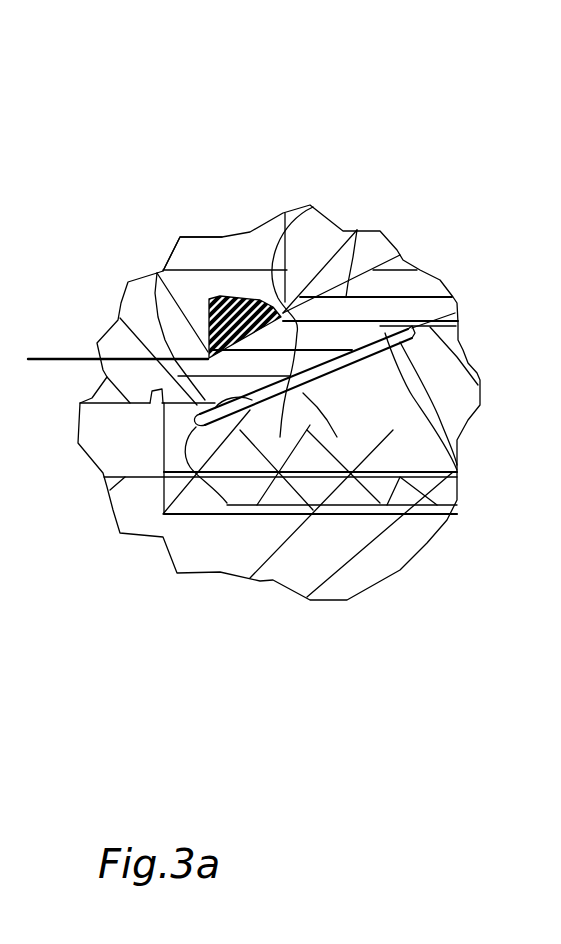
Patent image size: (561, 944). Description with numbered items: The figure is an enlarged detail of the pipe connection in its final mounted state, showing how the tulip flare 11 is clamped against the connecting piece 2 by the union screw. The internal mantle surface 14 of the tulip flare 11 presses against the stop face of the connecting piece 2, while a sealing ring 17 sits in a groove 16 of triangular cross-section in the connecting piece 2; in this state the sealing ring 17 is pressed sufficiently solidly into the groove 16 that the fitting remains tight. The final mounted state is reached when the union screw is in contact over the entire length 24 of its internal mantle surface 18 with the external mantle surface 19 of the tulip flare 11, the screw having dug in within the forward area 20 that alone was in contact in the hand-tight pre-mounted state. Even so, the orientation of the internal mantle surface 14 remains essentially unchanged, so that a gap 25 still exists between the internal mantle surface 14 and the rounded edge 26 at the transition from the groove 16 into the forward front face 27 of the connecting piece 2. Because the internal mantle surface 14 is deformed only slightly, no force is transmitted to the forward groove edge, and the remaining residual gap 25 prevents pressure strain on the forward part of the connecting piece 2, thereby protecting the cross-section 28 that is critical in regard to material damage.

The connecting piece 2 is at (254, 327).
The tulip flare 11 is at (398, 564).
The internal mantle surface 14 is at (363, 215).
The groove 16 is at (240, 175).
The sealing ring 17 is at (246, 229).
The internal mantle surface 18 is at (175, 606).
The external mantle surface 19 is at (299, 600).
The area 20 is at (206, 227).
The entire length 24 is at (208, 593).
The gap 25 is at (323, 555).
The rounded edge 26 is at (345, 245).
The forward front face 27 is at (380, 183).
The cross-section 28 is at (239, 227).